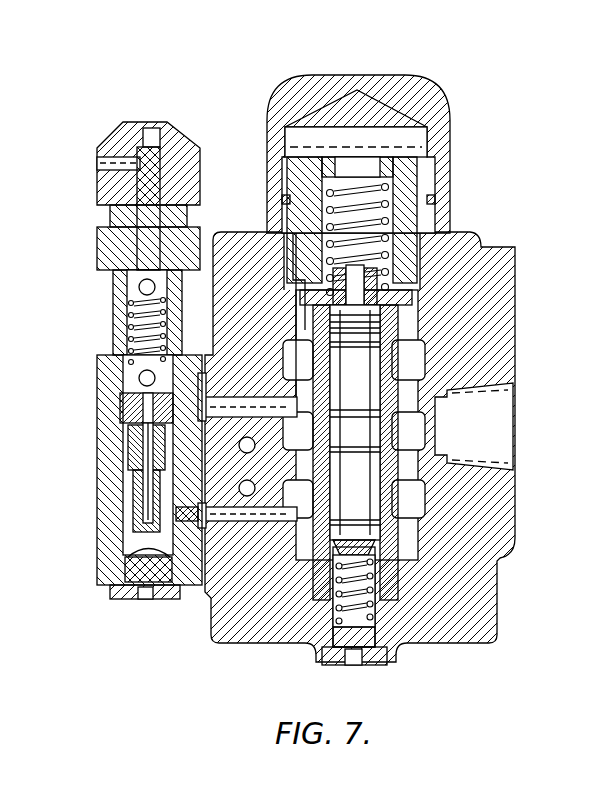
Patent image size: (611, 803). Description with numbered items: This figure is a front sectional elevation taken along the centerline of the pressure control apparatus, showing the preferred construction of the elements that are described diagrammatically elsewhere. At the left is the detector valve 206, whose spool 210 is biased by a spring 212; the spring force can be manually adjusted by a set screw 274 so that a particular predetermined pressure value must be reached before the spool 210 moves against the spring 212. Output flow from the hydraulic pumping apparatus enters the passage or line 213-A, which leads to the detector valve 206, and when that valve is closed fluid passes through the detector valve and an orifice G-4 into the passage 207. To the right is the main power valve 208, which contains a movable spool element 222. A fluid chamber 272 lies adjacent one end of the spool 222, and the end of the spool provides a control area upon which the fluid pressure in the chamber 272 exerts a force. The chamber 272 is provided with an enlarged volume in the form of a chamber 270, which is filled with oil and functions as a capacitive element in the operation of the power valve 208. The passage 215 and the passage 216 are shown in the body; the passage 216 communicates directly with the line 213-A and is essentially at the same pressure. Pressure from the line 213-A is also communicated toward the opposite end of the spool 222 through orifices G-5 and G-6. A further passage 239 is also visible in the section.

The detector valve 206 is at (110, 292).
The passage 207 is at (160, 514).
The main power valve 208 is at (263, 108).
The spool 210 is at (120, 412).
The spring 212 is at (125, 326).
The passage or line 213-A is at (160, 538).
The passage 215 is at (410, 292).
The passage 216 is at (330, 492).
The movable spool element 222 is at (360, 370).
The passage 239 is at (235, 395).
The chamber 270 is at (422, 140).
The fluid chamber 272 is at (380, 207).
The set screw 274 is at (107, 135).
The orifice G-4 is at (185, 474).
The orifice G-5 is at (400, 506).
The orifice G-6 is at (390, 573).